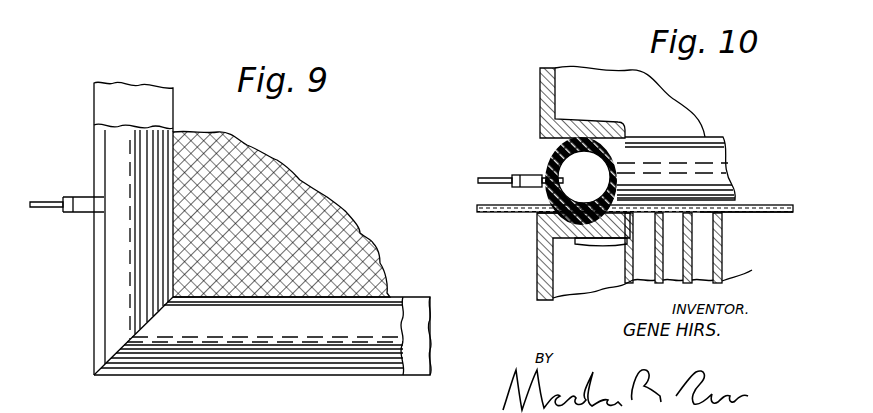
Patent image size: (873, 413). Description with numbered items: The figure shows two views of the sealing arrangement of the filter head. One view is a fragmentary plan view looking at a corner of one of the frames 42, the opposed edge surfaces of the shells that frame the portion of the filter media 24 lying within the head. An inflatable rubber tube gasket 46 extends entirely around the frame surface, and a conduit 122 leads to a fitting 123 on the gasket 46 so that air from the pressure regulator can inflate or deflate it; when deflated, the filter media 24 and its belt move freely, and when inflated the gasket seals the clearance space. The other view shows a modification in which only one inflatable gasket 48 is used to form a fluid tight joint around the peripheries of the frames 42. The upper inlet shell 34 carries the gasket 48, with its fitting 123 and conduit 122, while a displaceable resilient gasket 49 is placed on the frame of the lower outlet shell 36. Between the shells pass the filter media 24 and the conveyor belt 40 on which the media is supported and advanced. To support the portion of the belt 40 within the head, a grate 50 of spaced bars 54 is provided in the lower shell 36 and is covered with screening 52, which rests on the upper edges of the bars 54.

In FIG. 10, the filter media 24 is at (777, 204).
In FIG. 10, the inlet fluid conductor or shell 34 is at (540, 90).
In FIG. 10, the outlet fluid conductor or shell 36 is at (537, 278).
In FIG. 10, the conveyor belt 40 is at (762, 212).
In FIG. 9, the frames 42 is at (94, 100).
In FIG. 9, the inflatable rubber tube gasket 46 is at (113, 270).
In FIG. 10, the inflatable gasket 48 is at (553, 158).
In FIG. 10, the displaceable resilient gasket 49 is at (538, 215).
In FIG. 10, the grate 50 is at (723, 250).
In FIG. 9, the screening 52 is at (287, 183).
In FIG. 10, the screening 52 is at (600, 243).
In FIG. 10, the spaced bars 54 is at (652, 280).
In FIG. 9, the conduits 122 is at (40, 203).
In FIG. 10, the conduits 122 is at (478, 178).
In FIG. 9, the fittings 123 is at (78, 198).
In FIG. 10, the fittings 123 is at (522, 187).